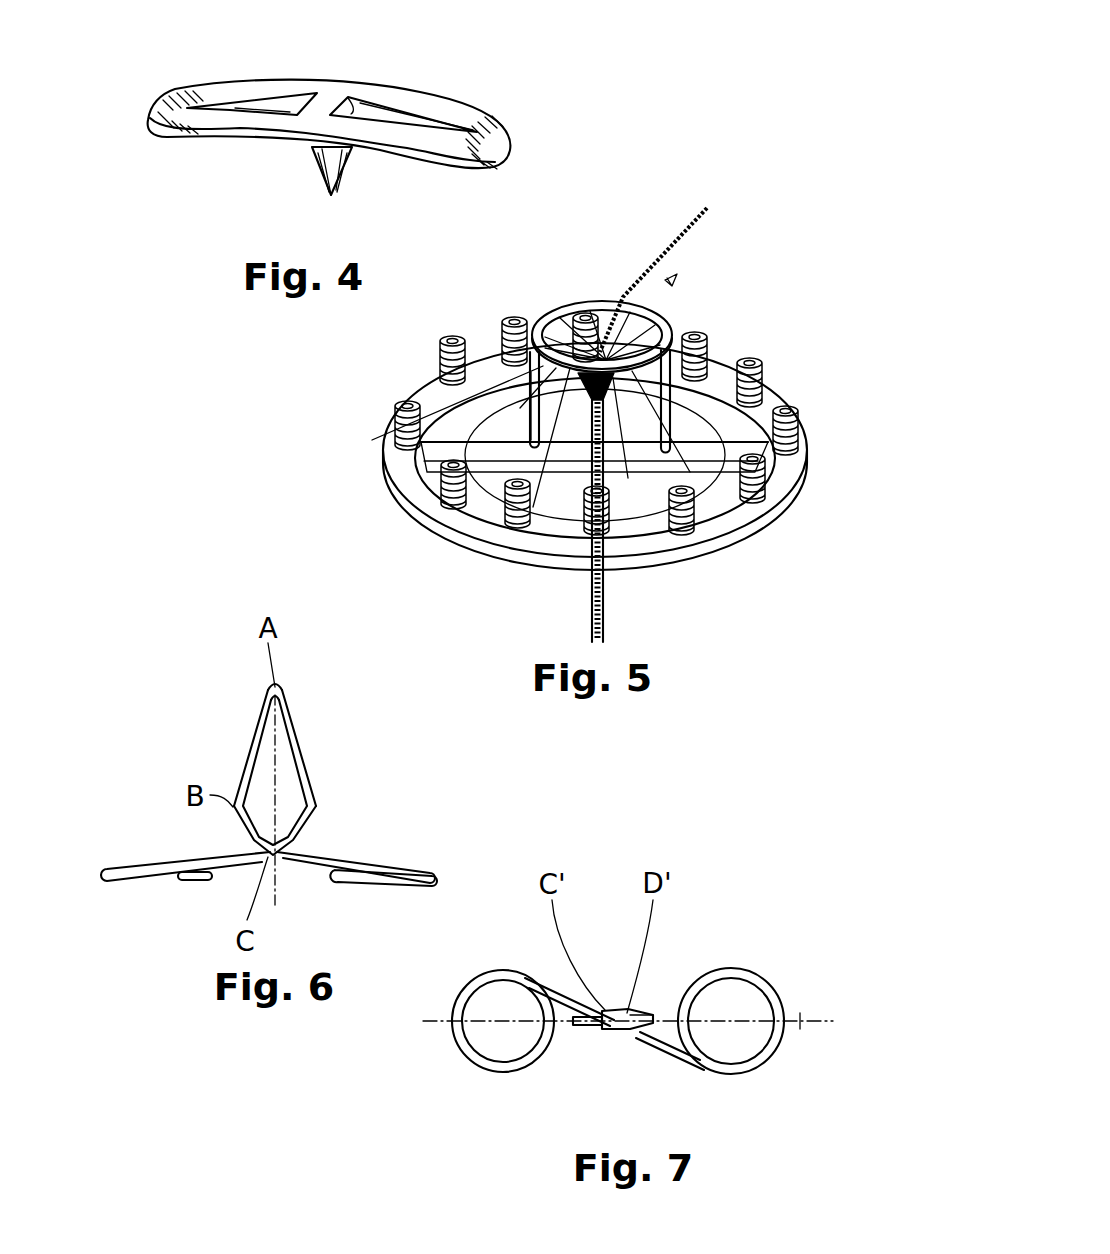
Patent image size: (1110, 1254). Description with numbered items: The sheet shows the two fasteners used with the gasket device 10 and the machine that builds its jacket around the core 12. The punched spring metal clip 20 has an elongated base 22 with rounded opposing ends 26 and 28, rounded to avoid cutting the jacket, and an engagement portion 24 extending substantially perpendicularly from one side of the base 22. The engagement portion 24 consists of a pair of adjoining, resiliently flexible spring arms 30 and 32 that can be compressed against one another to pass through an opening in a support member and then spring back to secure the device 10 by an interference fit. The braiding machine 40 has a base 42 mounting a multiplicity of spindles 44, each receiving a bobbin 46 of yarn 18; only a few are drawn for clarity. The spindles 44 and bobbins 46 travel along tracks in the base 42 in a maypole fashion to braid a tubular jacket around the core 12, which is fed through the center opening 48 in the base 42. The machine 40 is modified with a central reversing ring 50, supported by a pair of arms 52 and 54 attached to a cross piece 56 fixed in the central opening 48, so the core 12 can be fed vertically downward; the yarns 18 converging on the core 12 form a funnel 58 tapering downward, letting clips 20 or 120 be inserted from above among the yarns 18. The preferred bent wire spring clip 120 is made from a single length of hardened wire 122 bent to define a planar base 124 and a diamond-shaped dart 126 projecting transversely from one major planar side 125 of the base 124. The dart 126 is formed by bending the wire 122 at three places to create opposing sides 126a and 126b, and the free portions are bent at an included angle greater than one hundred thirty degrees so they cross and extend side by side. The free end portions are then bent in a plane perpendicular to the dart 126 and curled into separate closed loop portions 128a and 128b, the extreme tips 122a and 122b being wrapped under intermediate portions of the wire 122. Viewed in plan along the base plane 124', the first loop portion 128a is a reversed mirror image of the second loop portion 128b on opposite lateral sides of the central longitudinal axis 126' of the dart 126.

In FIG. 5, the device 10 is at (595, 417).
In FIG. 5, the core 12 is at (663, 251).
In FIG. 5, the yarn 18 is at (440, 396).
In FIG. 4, the clip 20 is at (320, 126).
In FIG. 5, the clip 20 is at (672, 281).
In FIG. 4, the base 22 is at (185, 104).
In FIG. 4, the engagement portion 24 is at (307, 158).
In FIG. 4, the end 26 is at (152, 116).
In FIG. 4, the end 28 is at (500, 152).
In FIG. 4, the spring arm 30 is at (323, 188).
In FIG. 4, the spring arm 32 is at (343, 190).
In FIG. 5, the braiding machine 40 is at (595, 417).
In FIG. 5, the base 42 is at (795, 497).
In FIG. 5, the spindle 44 is at (776, 406).
In FIG. 5, the bobbin 46 is at (503, 330).
In FIG. 5, the center opening 48 is at (618, 450).
In FIG. 5, the reversing ring 50 is at (597, 300).
In FIG. 5, the arm 52 is at (808, 450).
In FIG. 5, the arm 54 is at (530, 427).
In FIG. 5, the cross piece 56 is at (540, 455).
In FIG. 5, the funnel 58 is at (612, 398).
In FIG. 6, the bent wire spring clip 120 is at (258, 809).
In FIG. 7, the bent wire spring clip 120 is at (678, 1005).
In FIG. 6, the wire 122 is at (269, 875).
In FIG. 6, the free end 122a is at (355, 885).
In FIG. 7, the free end 122a is at (705, 1067).
In FIG. 6, the free end 122b is at (193, 882).
In FIG. 7, the free end 122b is at (535, 980).
In FIG. 6, the base portion 124 is at (235, 875).
In FIG. 7, the base portion 124 is at (678, 1021).
In FIG. 7, the base plane 124' is at (806, 968).
In FIG. 6, the major planar side 125 is at (380, 866).
In FIG. 6, the dart 126 is at (309, 763).
In FIG. 6, the side 126a is at (250, 745).
In FIG. 7, the side 126a is at (610, 1010).
In FIG. 6, the side 126b is at (297, 753).
In FIG. 7, the side 126b is at (617, 1029).
In FIG. 6, the central longitudinal axis 126' is at (329, 696).
In FIG. 7, the central longitudinal axis 126' is at (675, 962).
In FIG. 7, the loop portion 128a is at (690, 1057).
In FIG. 7, the loop portion 128b is at (543, 1055).